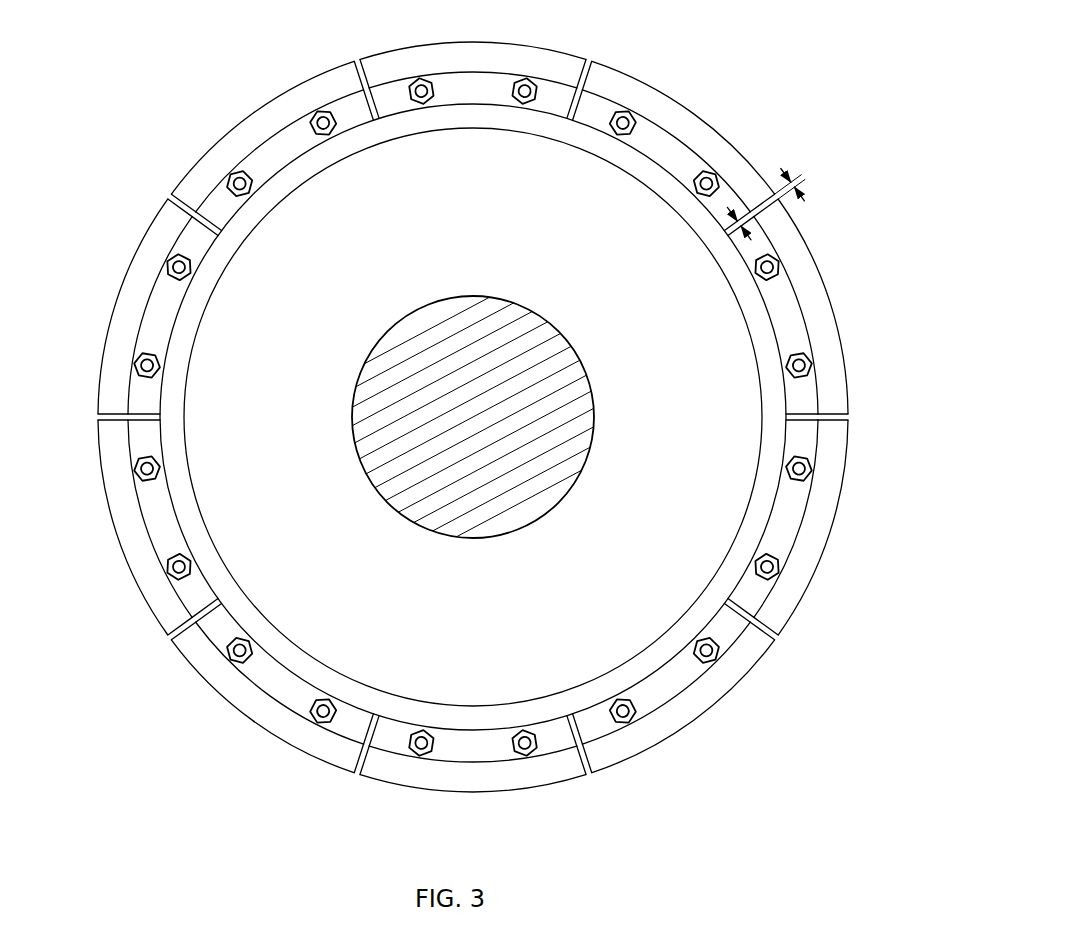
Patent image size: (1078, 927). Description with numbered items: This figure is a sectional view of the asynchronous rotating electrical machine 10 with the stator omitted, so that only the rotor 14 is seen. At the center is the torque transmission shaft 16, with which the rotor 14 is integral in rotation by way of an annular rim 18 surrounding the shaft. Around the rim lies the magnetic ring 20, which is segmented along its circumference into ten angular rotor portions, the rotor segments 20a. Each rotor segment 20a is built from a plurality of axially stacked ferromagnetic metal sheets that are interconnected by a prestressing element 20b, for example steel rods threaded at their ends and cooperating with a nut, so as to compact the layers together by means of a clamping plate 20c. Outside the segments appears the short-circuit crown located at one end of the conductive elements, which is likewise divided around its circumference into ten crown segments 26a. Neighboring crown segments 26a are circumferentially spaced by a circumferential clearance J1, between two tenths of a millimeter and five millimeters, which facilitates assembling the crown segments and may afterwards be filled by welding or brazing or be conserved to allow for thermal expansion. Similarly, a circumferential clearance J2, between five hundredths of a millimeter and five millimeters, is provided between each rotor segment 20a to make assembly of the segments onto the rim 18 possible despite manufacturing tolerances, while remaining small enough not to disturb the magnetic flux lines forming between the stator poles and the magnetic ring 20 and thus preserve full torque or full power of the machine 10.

The asynchronous rotating electrical machine 10 is at (772, 48).
The rotor 14 is at (852, 357).
The torque transmission shaft 16 is at (457, 532).
The annular rim 18 is at (650, 662).
The magnetic ring 20 is at (632, 56).
The rotor segment 20a is at (485, 434).
The prestressing element 20b is at (327, 140).
The clamping plate 20c is at (346, 108).
The crown segment 26a is at (516, 57).
The circumferential clearance J1 is at (802, 184).
The circumferential clearance J2 is at (752, 240).